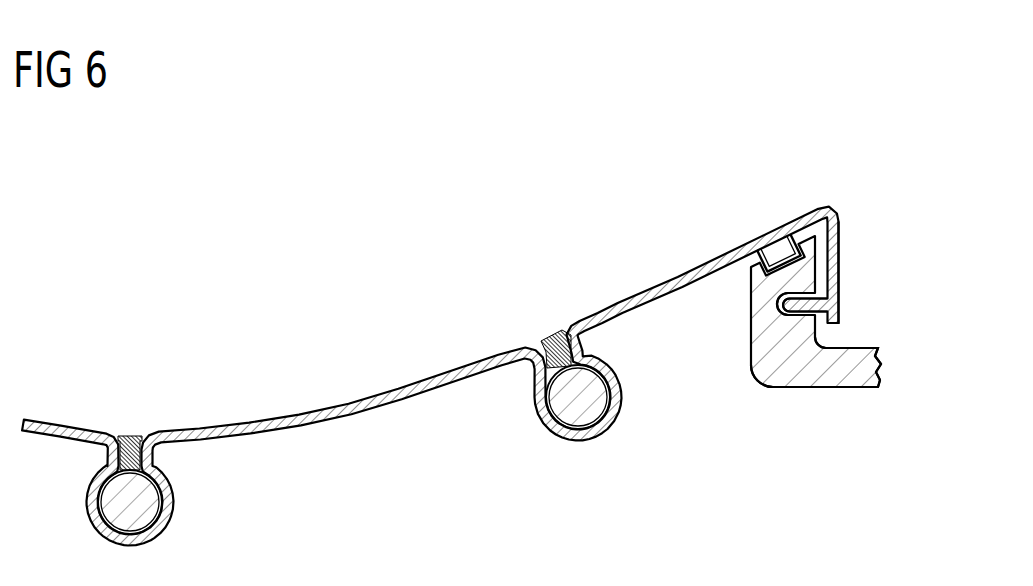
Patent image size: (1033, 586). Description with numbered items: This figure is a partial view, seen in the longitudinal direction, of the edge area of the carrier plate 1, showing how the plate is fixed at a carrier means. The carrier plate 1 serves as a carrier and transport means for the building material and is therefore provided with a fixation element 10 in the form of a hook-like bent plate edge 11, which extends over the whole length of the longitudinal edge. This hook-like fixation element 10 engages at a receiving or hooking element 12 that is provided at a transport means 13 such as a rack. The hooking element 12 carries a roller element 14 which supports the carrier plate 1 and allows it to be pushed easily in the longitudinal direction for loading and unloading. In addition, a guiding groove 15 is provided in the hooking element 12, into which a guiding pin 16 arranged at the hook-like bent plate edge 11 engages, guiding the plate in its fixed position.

The carrier plate 1 is at (301, 317).
The fixation element 10 is at (842, 192).
The hook-like bent plate edge 11 is at (841, 245).
The receiving or hooking element 12 is at (778, 325).
The transport means 13 is at (847, 401).
The roller element 14 is at (778, 257).
The guiding groove 15 is at (777, 304).
The guiding pin 16 is at (800, 306).